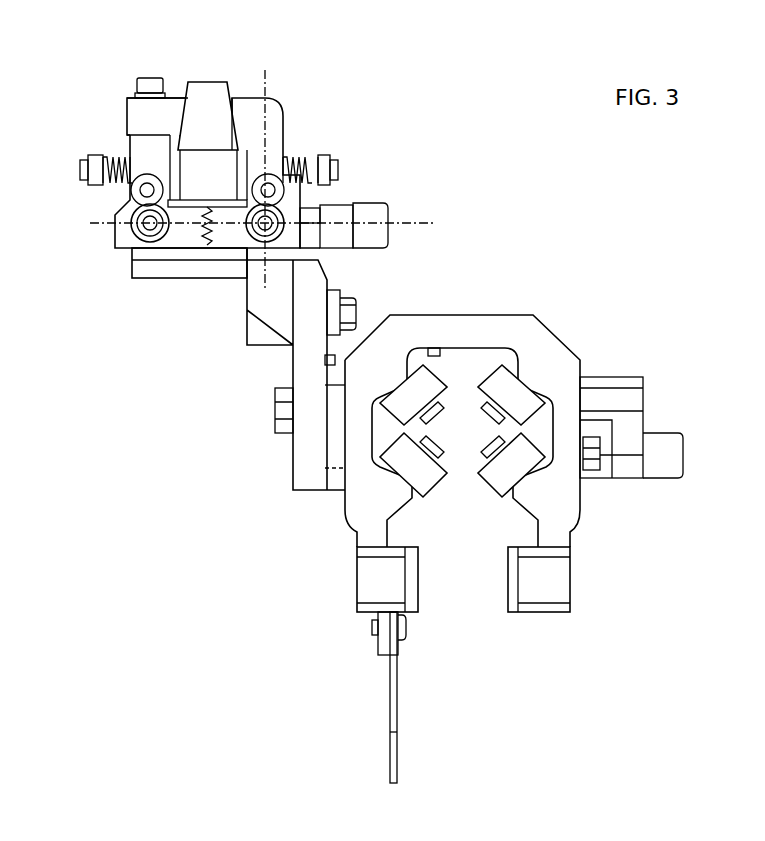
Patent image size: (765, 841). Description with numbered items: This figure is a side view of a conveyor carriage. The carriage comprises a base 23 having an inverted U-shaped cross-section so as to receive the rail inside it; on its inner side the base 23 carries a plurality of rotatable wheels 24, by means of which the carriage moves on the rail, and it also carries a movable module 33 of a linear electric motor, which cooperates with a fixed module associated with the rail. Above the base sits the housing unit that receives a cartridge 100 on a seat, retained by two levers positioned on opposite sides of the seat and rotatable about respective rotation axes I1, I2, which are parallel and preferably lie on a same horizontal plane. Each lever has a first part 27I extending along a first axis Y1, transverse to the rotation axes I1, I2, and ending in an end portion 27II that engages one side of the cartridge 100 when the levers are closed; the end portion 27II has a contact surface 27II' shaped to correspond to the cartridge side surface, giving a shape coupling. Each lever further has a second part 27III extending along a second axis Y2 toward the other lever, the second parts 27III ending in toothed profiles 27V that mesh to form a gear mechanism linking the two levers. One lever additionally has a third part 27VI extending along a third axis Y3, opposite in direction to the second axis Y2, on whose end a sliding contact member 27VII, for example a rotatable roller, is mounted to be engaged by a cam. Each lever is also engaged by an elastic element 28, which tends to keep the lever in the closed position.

The cartridge 100 is at (210, 92).
The contact surface 27II' is at (163, 84).
The end portion 27II is at (259, 94).
The first part 27I is at (283, 123).
The first axis Y1 is at (268, 88).
The elastic element 28 is at (122, 168).
The third part 27VI is at (342, 218).
The third axis Y3 is at (420, 226).
The sliding contact member 27VII is at (378, 240).
The rotation axis I2 is at (268, 226).
The rotation axis I1 is at (150, 226).
The second axis Y2 is at (105, 228).
The second part 27III is at (228, 240).
The toothed profile 27V is at (207, 246).
The rotatable wheels 24 is at (490, 480).
The base 23 is at (575, 525).
The movable module 33 is at (552, 578).